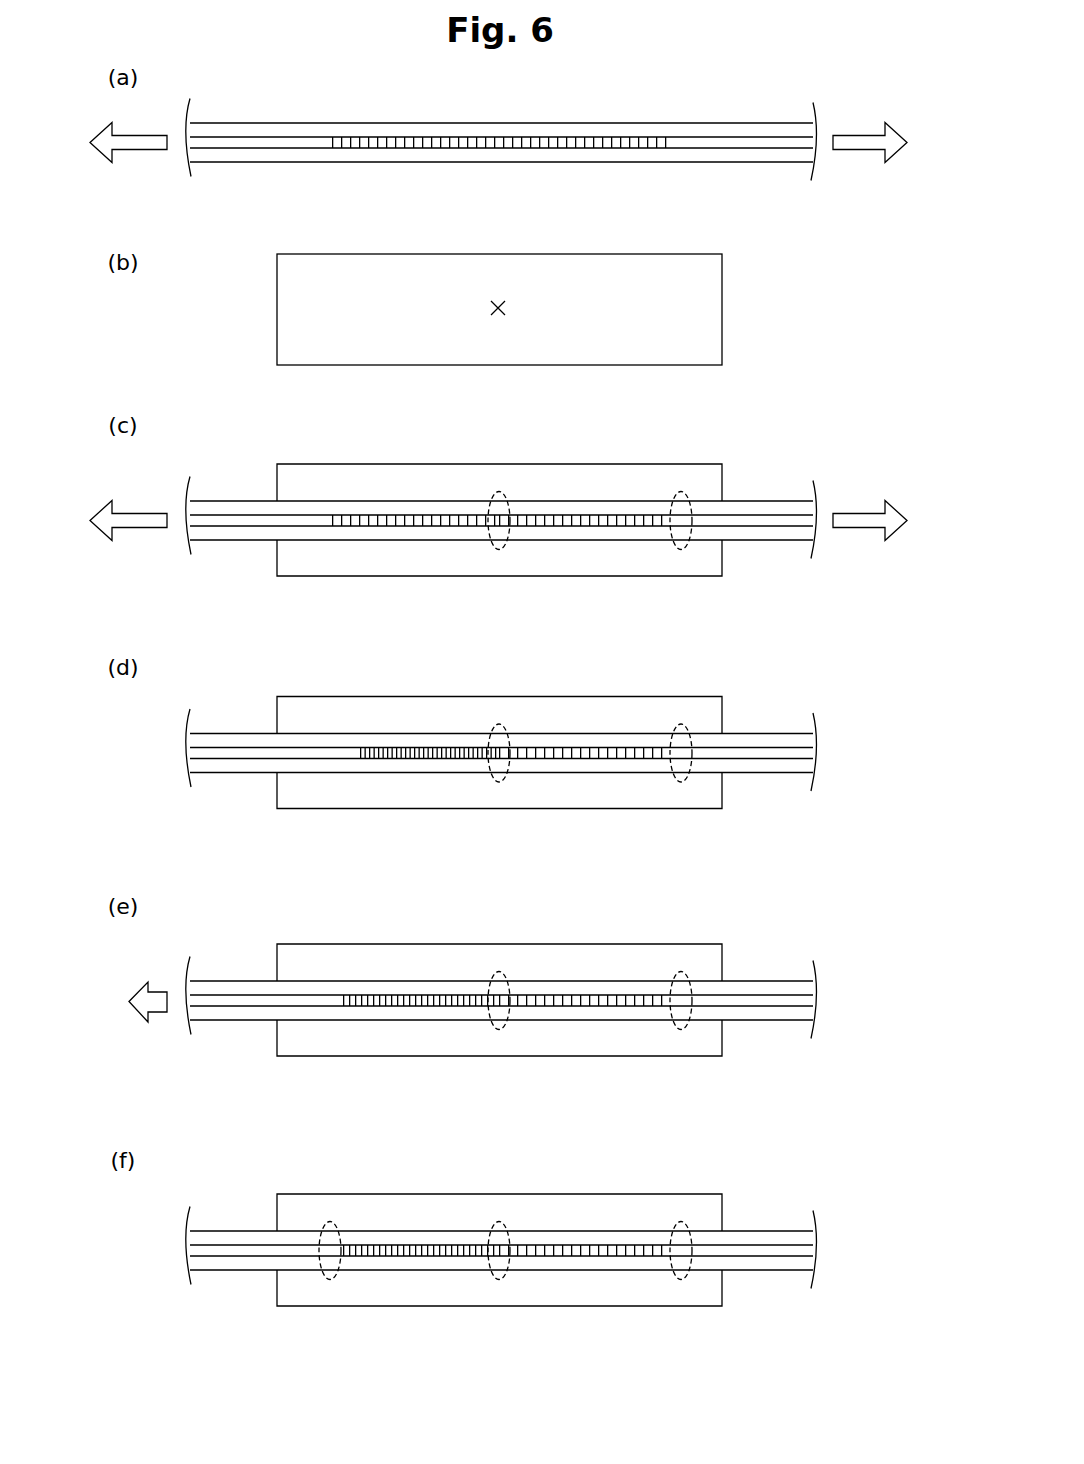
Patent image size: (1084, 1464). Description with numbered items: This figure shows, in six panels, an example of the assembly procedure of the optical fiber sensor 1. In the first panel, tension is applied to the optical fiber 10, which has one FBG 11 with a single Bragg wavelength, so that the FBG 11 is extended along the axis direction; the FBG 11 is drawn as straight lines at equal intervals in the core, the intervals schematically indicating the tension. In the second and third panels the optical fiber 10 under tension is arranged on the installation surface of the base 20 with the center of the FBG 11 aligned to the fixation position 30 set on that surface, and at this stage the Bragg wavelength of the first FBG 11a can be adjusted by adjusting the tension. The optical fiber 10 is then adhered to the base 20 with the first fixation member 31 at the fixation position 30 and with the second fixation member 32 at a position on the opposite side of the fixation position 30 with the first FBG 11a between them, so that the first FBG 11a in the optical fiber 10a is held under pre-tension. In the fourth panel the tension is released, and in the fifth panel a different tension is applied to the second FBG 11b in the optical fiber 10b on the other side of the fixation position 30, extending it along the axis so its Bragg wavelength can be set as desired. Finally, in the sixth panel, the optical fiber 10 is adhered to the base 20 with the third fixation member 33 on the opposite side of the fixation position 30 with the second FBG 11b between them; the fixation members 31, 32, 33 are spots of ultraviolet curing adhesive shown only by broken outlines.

The optical fiber sensor 1 is at (805, 1159).
The optical fiber 10 is at (509, 697).
The optical fiber on one side of the fixation position 10a is at (766, 542).
The optical fiber on the other side of the fixation position 10b is at (249, 542).
The FBG 11 is at (497, 136).
The first FBG 11a is at (577, 528).
The second FBG 11b is at (410, 528).
The base 20 is at (722, 276).
The fixation position 30 is at (500, 300).
The first fixation member 31 is at (502, 491).
The second fixation member 32 is at (683, 491).
The third fixation member 33 is at (333, 1221).